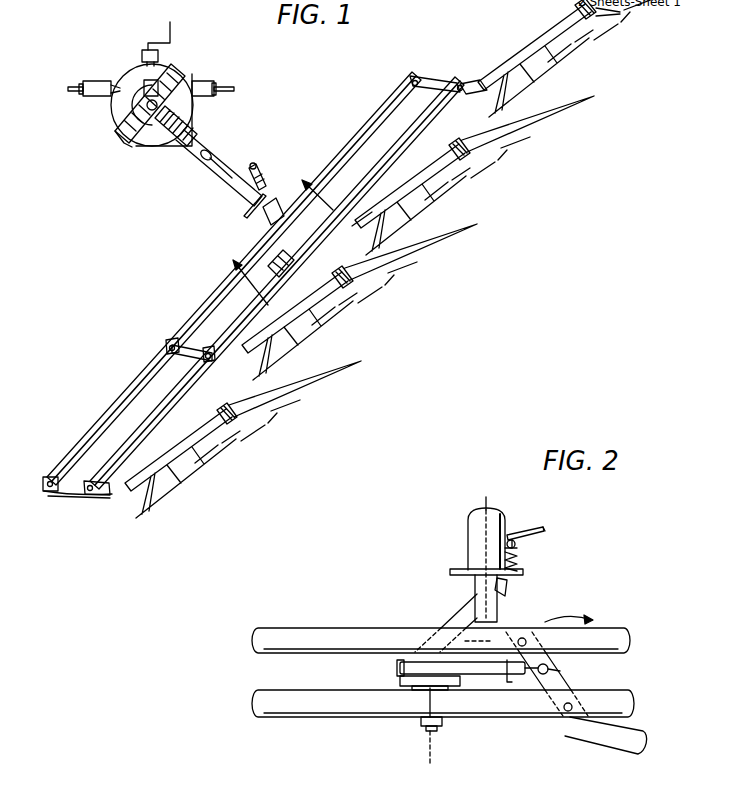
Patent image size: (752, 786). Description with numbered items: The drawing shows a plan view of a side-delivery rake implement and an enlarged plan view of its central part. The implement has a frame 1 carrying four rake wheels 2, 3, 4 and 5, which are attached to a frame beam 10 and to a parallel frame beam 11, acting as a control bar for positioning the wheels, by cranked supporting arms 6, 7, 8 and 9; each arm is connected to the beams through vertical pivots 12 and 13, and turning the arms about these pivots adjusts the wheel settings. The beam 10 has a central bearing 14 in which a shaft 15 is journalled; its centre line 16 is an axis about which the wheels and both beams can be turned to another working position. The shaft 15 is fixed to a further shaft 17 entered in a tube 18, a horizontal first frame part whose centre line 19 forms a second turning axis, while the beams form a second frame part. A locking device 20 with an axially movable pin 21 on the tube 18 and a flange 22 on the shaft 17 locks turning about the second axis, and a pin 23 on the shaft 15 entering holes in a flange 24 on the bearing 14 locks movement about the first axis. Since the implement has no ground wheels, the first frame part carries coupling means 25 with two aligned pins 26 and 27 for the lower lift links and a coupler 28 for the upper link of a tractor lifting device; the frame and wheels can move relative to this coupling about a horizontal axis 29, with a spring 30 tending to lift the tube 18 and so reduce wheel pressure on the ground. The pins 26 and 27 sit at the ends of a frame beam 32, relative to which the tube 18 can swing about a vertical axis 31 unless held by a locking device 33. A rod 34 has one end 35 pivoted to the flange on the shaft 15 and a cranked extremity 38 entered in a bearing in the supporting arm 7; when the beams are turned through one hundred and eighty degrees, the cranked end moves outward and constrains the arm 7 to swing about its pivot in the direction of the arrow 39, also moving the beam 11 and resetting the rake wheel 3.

In FIG. 1, the frame 1 is at (300, 197).
In FIG. 1, the rake wheel 2 is at (608, 24).
In FIG. 1, the rake wheel 3 is at (500, 152).
In FIG. 1, the rake wheel 4 is at (400, 300).
In FIG. 1, the rake wheel 5 is at (246, 440).
In FIG. 1, the cranked supporting arm 6 is at (470, 94).
In FIG. 1, the cranked supporting arm 7 is at (365, 224).
In FIG. 2, the cranked supporting arm 7 is at (621, 741).
In FIG. 1, the cranked supporting arm 8 is at (216, 360).
In FIG. 1, the cranked supporting arm 9 is at (116, 494).
In FIG. 1, the frame beam 10 is at (396, 144).
In FIG. 2, the frame beam 10 is at (292, 705).
In FIG. 1, the frame beam 11 is at (376, 126).
In FIG. 2, the frame beam 11 is at (292, 631).
In FIG. 1, the vertical pivot 12 is at (92, 482).
In FIG. 2, the vertical pivot 12 is at (568, 712).
In FIG. 1, the vertical pivot 13 is at (52, 477).
In FIG. 2, the vertical pivot 13 is at (524, 638).
In FIG. 2, the bearing 14 is at (424, 723).
In FIG. 1, the shaft 15 is at (291, 266).
In FIG. 2, the shaft 15 is at (438, 726).
In FIG. 2, the centre line 16 is at (432, 752).
In FIG. 1, the further shaft 17 is at (257, 216).
In FIG. 2, the further shaft 17 is at (475, 578).
In FIG. 1, the tube 18 is at (226, 182).
In FIG. 2, the tube 18 is at (475, 530).
In FIG. 2, the centre line 19 is at (498, 548).
In FIG. 1, the locking device 20 is at (252, 168).
In FIG. 2, the locking device 20 is at (520, 538).
In FIG. 2, the axially movable pin 21 is at (546, 532).
In FIG. 2, the flange 22 is at (520, 573).
In FIG. 2, the locking pin 23 is at (470, 644).
In FIG. 2, the flange 24 is at (461, 686).
In FIG. 1, the coupling means 25 is at (112, 120).
In FIG. 1, the aligned pin 26 is at (73, 84).
In FIG. 1, the aligned pin 27 is at (228, 88).
In FIG. 1, the coupler 28 is at (170, 72).
In FIG. 1, the horizontal axis 29 is at (127, 146).
In FIG. 1, the spring 30 is at (198, 130).
In FIG. 1, the vertical axis 31 is at (145, 80).
In FIG. 1, the frame beam 32 is at (103, 96).
In FIG. 1, the locking device 33 is at (165, 40).
In FIG. 2, the rod 34 is at (509, 679).
In FIG. 2, the end of rod 35 is at (399, 668).
In FIG. 2, the cranked extremity 38 is at (556, 672).
In FIG. 2, the arrow 39 is at (569, 608).